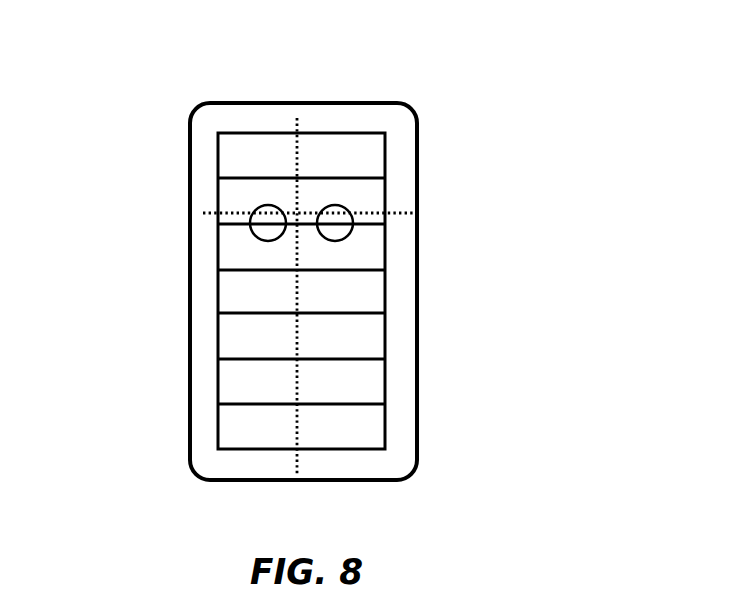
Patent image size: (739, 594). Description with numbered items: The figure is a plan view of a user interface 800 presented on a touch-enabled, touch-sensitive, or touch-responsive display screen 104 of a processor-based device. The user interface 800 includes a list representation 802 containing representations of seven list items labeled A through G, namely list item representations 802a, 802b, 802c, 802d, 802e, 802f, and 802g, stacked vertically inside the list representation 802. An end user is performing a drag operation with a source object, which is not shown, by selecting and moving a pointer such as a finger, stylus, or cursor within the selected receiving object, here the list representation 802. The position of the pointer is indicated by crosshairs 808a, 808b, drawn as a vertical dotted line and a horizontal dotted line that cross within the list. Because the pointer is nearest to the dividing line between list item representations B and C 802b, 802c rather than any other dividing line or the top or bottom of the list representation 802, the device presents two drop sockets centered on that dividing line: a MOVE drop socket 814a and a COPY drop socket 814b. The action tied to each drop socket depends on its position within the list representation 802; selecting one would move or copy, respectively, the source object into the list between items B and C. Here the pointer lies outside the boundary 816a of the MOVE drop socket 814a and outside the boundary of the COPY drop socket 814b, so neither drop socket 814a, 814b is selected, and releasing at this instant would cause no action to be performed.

The user interface 800 is at (211, 114).
The display screen 104 is at (421, 124).
The list representation 802 is at (325, 133).
The list item representation A 802a is at (357, 145).
The list item representation B 802b is at (370, 201).
The list item representation C 802c is at (370, 245).
The list item representation D 802d is at (370, 290).
The list item representation E 802e is at (366, 344).
The list item representation F 802f is at (368, 383).
The list item representation G 802g is at (368, 423).
The crosshair 808a is at (293, 118).
The crosshair 808b is at (203, 212).
The MOVE drop socket 814a is at (280, 210).
The COPY drop socket 814b is at (348, 210).
The boundary 816a is at (250, 228).